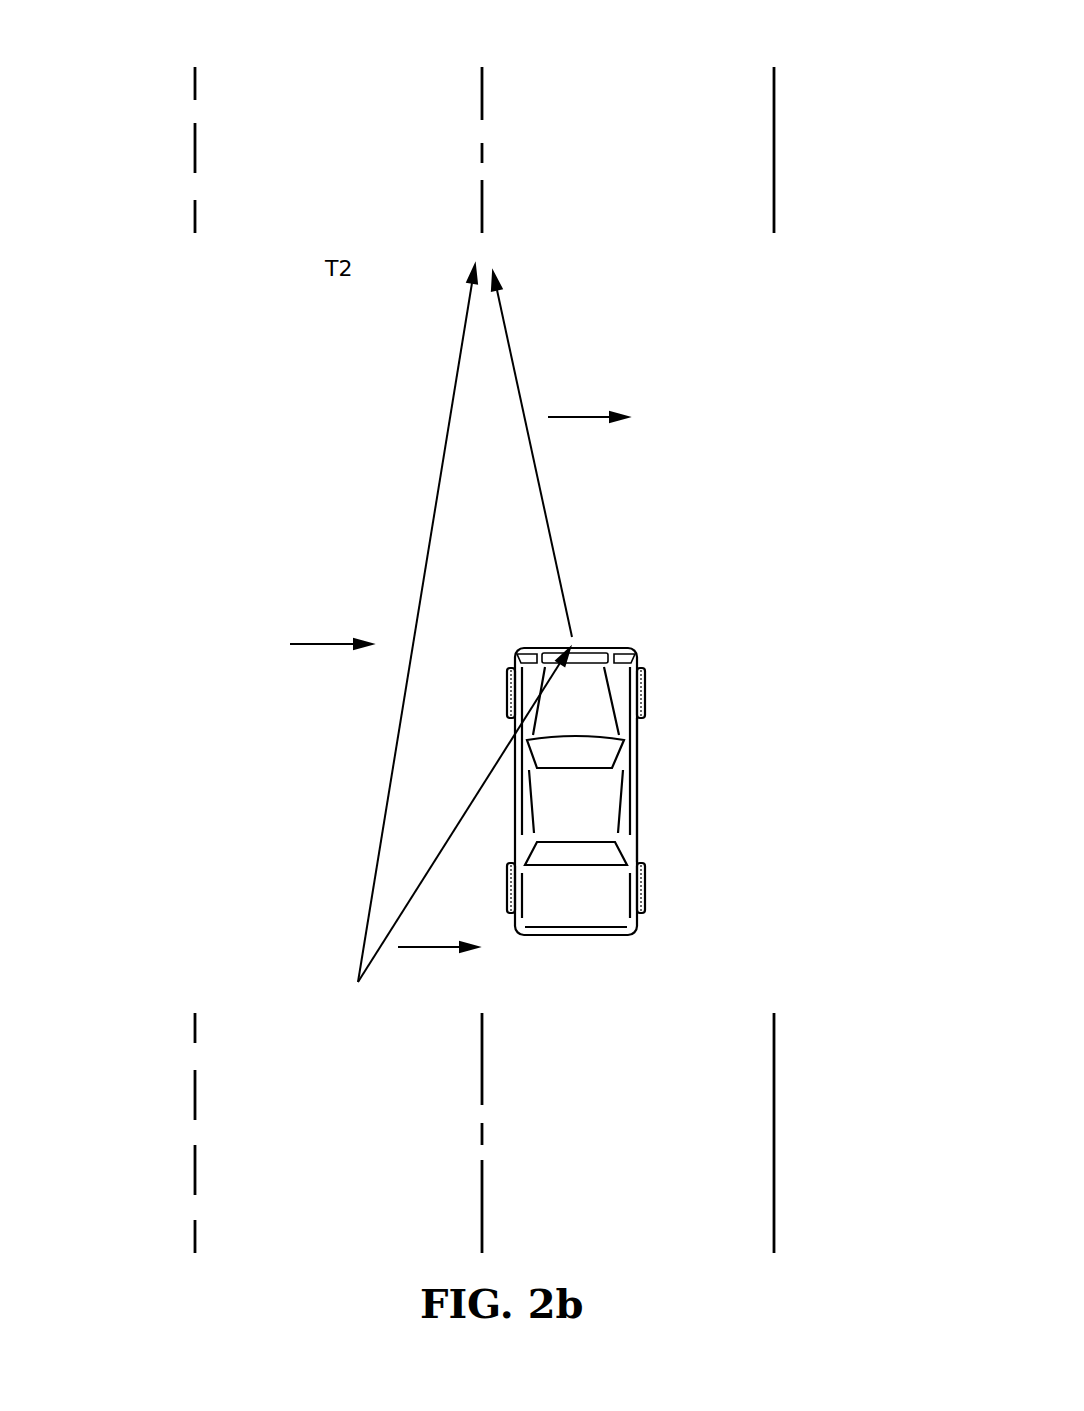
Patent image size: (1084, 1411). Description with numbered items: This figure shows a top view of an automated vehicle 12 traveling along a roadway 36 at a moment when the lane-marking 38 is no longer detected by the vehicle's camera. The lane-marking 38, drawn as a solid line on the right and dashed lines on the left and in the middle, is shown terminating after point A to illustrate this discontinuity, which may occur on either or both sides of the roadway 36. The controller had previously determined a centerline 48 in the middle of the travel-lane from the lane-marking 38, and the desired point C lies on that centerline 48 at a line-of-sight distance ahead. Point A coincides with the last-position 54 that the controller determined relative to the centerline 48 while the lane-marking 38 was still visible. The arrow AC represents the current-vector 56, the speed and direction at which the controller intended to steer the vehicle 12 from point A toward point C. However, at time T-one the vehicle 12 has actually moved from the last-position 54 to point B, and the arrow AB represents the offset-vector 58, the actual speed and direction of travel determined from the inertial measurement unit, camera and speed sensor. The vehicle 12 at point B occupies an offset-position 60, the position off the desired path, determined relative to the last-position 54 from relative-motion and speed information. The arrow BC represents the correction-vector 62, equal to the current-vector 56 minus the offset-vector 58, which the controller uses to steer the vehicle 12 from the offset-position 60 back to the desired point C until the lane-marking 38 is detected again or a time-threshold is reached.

The vehicle 12 is at (638, 832).
The roadway 36 is at (222, 275).
The lane-marking 38 is at (195, 172).
The centerline 48 is at (481, 85).
The last-position 54 is at (330, 1003).
The current-vector 56 is at (315, 647).
The offset-vector 58 is at (425, 950).
The offset-position 60 is at (638, 737).
The correction-vector 62 is at (578, 418).